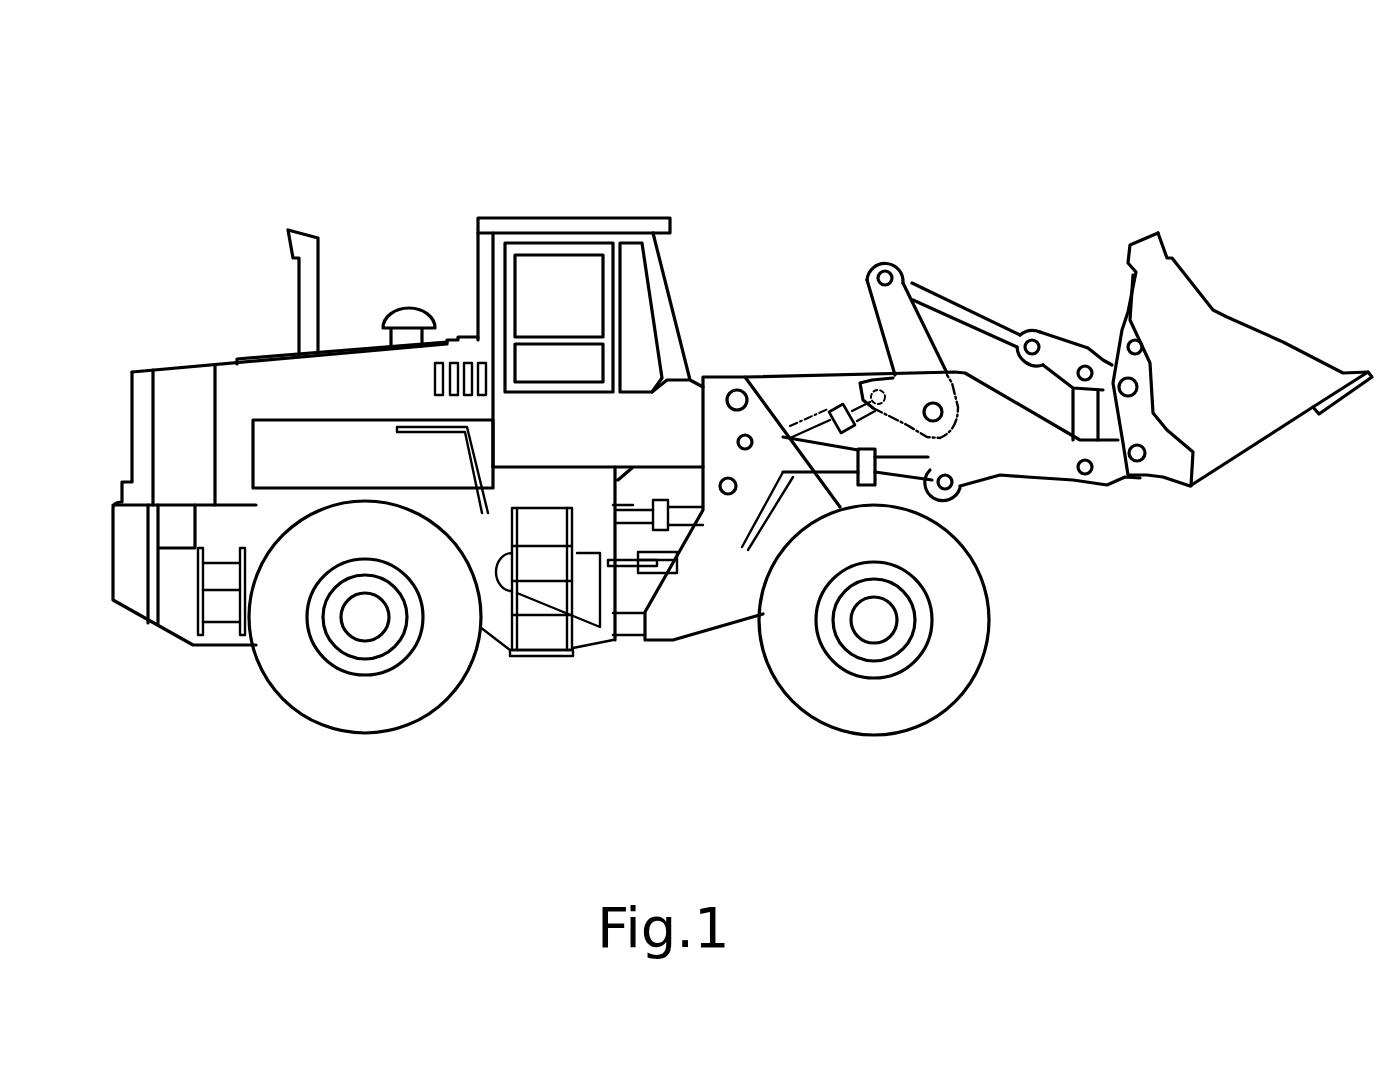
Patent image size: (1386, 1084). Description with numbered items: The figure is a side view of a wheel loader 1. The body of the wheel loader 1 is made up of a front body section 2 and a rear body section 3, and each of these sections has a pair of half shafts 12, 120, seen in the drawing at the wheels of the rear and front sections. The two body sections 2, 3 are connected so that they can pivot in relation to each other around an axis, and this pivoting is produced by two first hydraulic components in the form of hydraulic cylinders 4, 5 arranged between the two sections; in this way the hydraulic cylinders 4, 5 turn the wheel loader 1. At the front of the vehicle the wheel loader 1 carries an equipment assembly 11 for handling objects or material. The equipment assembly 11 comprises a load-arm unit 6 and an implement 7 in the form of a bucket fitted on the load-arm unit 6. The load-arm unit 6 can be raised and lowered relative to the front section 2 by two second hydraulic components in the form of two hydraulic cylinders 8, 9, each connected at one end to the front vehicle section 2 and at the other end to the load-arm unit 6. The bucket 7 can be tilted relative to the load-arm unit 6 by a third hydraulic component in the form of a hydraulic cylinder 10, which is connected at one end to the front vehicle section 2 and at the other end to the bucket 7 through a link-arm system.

The wheel loader 1 is at (412, 146).
The front body section 2 is at (687, 637).
The rear body section 3 is at (173, 627).
The hydraulic cylinder 4 is at (678, 508).
The hydraulic cylinder 5 is at (678, 515).
The load-arm unit 6 is at (1026, 467).
The implement 7 is at (1265, 423).
The hydraulic cylinder 8 is at (905, 482).
The hydraulic cylinder 9 is at (917, 479).
The hydraulic cylinder 10 is at (855, 400).
The equipment assembly 11 is at (1079, 216).
The half shafts 12 is at (375, 623).
The half shafts 120 is at (883, 627).